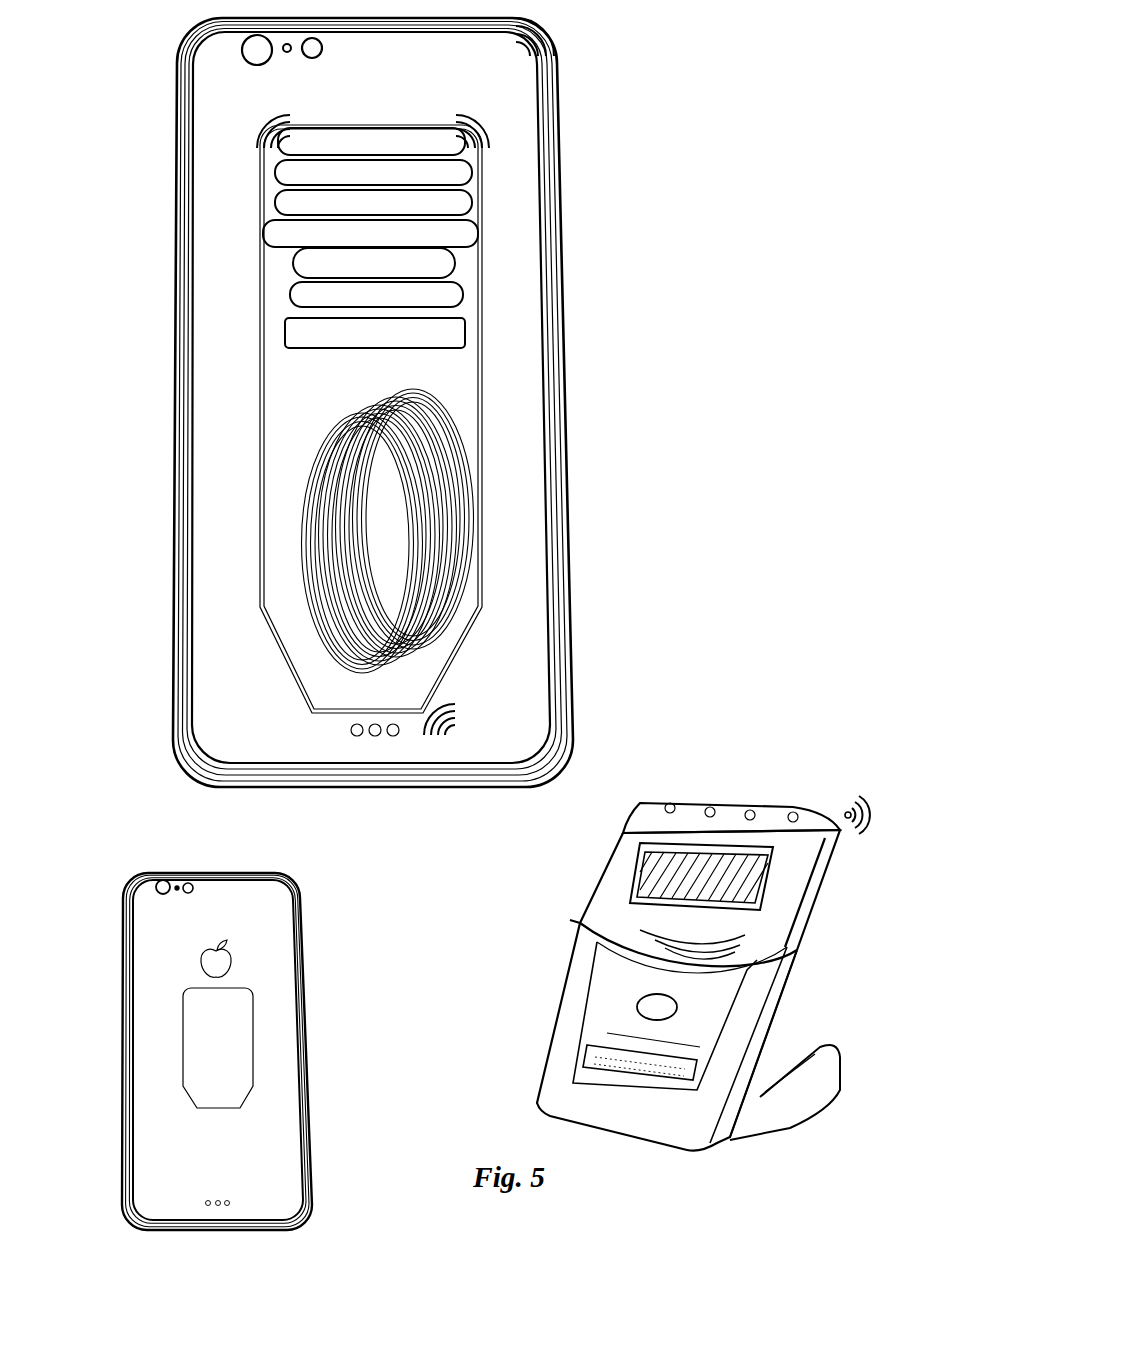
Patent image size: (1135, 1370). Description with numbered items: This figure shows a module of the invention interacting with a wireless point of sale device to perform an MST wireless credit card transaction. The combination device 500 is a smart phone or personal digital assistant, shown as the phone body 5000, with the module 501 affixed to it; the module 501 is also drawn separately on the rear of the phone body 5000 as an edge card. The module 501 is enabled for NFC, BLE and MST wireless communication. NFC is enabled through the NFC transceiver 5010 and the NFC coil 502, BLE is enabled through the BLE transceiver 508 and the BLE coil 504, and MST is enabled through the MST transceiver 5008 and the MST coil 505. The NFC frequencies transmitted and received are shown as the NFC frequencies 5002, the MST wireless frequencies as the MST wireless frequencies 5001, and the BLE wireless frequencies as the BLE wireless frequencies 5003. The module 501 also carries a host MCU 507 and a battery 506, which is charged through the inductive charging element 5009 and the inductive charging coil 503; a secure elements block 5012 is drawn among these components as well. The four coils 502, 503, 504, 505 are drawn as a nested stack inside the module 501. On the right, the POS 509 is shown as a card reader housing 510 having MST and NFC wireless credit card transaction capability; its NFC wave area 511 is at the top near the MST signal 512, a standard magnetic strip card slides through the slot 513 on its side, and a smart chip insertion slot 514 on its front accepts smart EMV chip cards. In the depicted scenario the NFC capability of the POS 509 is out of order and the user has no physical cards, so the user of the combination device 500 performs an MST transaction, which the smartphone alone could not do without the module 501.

The smart phone with module affixed 500 is at (111, 66).
The mobile phone 5000 is at (177, 167).
The module 501 is at (270, 442).
The MST wireless frequencies 5001 is at (483, 120).
The NFC frequencies 5002 is at (258, 128).
The BLE wireless frequencies 5003 is at (447, 722).
The NFC transceiver 5010 is at (465, 152).
The BLE transceiver 508 is at (472, 173).
The MST transceiver 5008 is at (472, 200).
The inductive charging element 5009 is at (470, 225).
The battery 506 is at (455, 266).
The host MCU 507 is at (290, 295).
The secure elements 5012 is at (465, 333).
The NFC coil 502 is at (417, 488).
The inductive charging coil 503 is at (438, 488).
The BLE coil 504 is at (455, 508).
The MST coil 505 is at (473, 527).
The POS 509 is at (703, 851).
The reader housing 510 is at (575, 922).
The NFC wave area 511 is at (670, 805).
The MST signal 512 is at (854, 768).
The slot 513 is at (787, 977).
The smart chip insertion slot 514 is at (607, 1027).